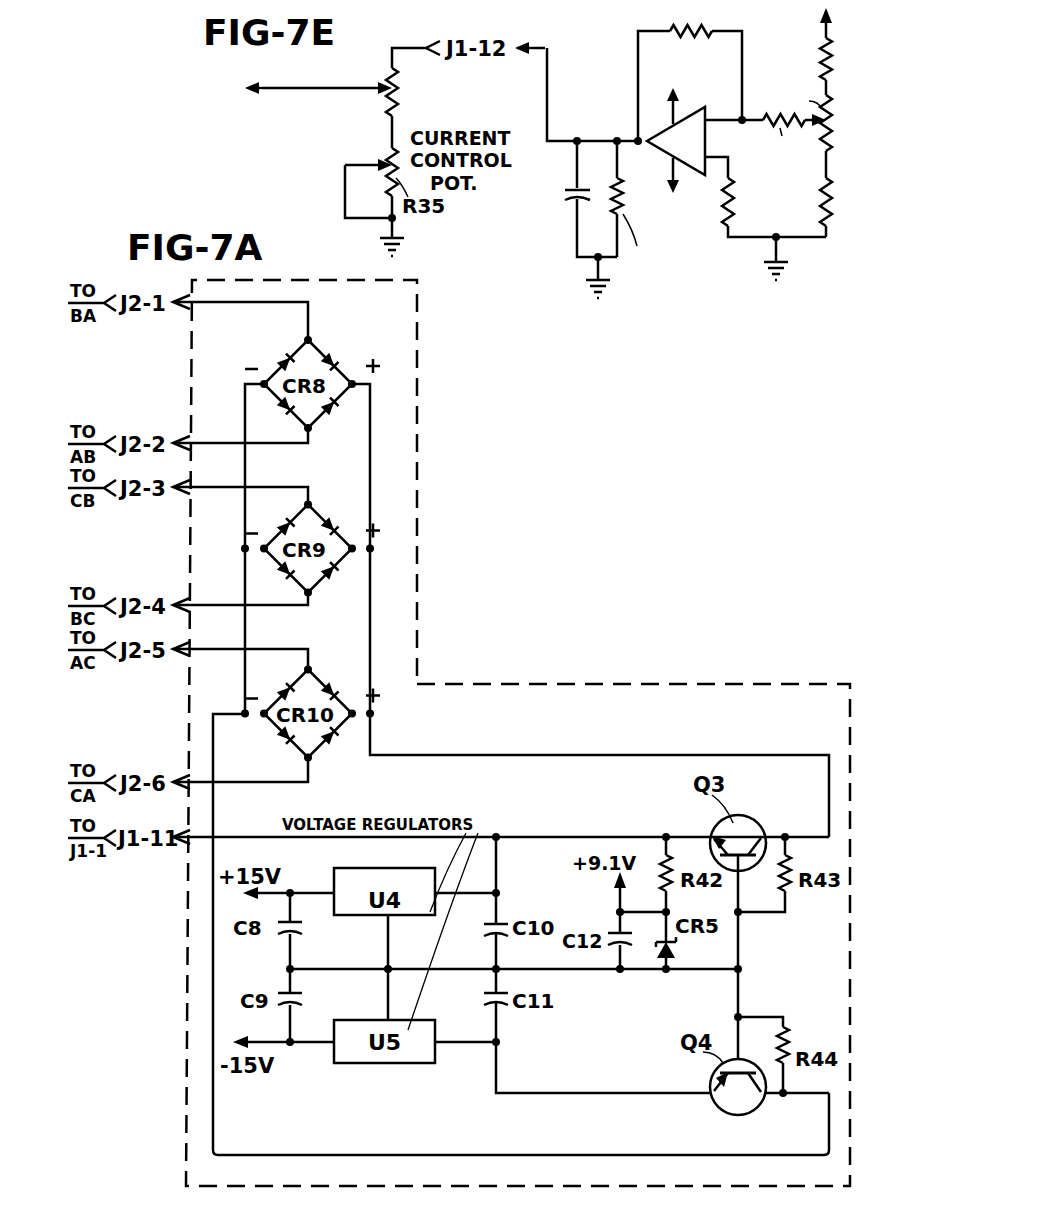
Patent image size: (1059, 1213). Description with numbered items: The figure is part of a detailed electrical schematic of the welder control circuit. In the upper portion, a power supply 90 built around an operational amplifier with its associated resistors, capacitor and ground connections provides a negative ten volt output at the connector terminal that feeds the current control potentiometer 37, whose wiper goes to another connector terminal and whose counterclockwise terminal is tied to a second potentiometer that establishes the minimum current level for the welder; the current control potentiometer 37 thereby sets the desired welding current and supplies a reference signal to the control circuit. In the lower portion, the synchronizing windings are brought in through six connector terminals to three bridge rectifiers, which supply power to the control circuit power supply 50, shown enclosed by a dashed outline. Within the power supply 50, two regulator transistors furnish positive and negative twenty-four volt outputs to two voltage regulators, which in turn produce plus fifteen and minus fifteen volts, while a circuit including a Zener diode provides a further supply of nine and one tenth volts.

In FIG. 7E, the current control potentiometer 37 is at (399, 95).
In FIG. 7E, the power supply 90 is at (636, 290).
In FIG. 7A, the control circuit power supply 50 is at (638, 683).